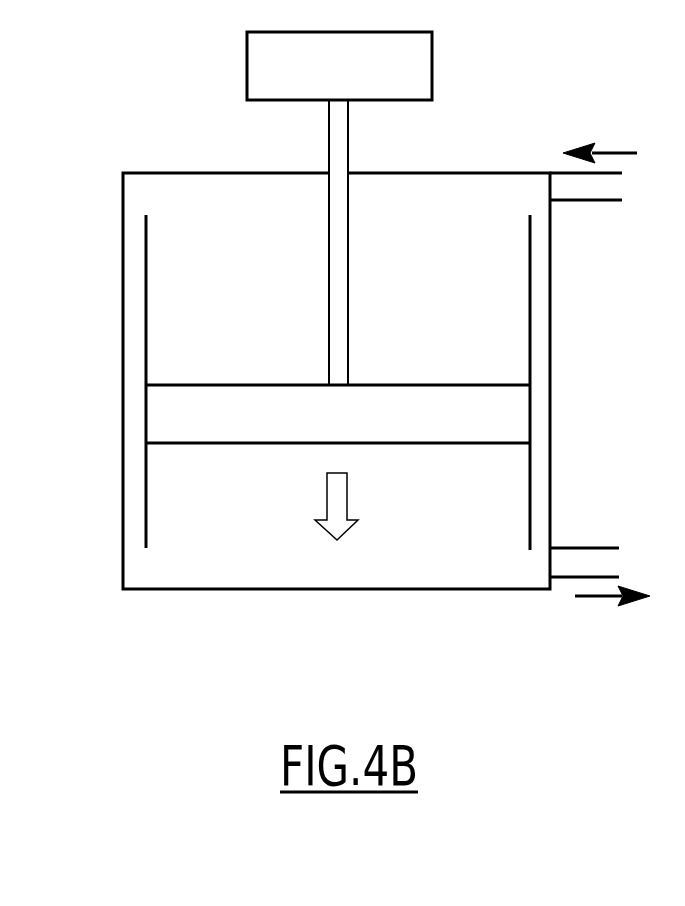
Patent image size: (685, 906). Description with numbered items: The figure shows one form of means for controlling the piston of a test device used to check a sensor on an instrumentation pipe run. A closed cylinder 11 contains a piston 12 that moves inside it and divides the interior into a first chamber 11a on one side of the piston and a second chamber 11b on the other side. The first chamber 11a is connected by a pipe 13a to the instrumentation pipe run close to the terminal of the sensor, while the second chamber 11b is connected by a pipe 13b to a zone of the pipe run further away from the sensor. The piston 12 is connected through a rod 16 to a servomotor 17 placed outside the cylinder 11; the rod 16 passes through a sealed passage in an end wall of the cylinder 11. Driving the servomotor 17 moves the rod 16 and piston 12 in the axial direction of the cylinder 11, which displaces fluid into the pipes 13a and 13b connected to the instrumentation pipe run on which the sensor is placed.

The closed cylinder 11 is at (123, 193).
The first chamber 11a is at (389, 506).
The second chamber 11b is at (430, 259).
The piston 12 is at (461, 396).
The pipe 13a is at (590, 548).
The pipe 13b is at (590, 201).
The rod 16 is at (348, 137).
The servomotor 17 is at (432, 61).